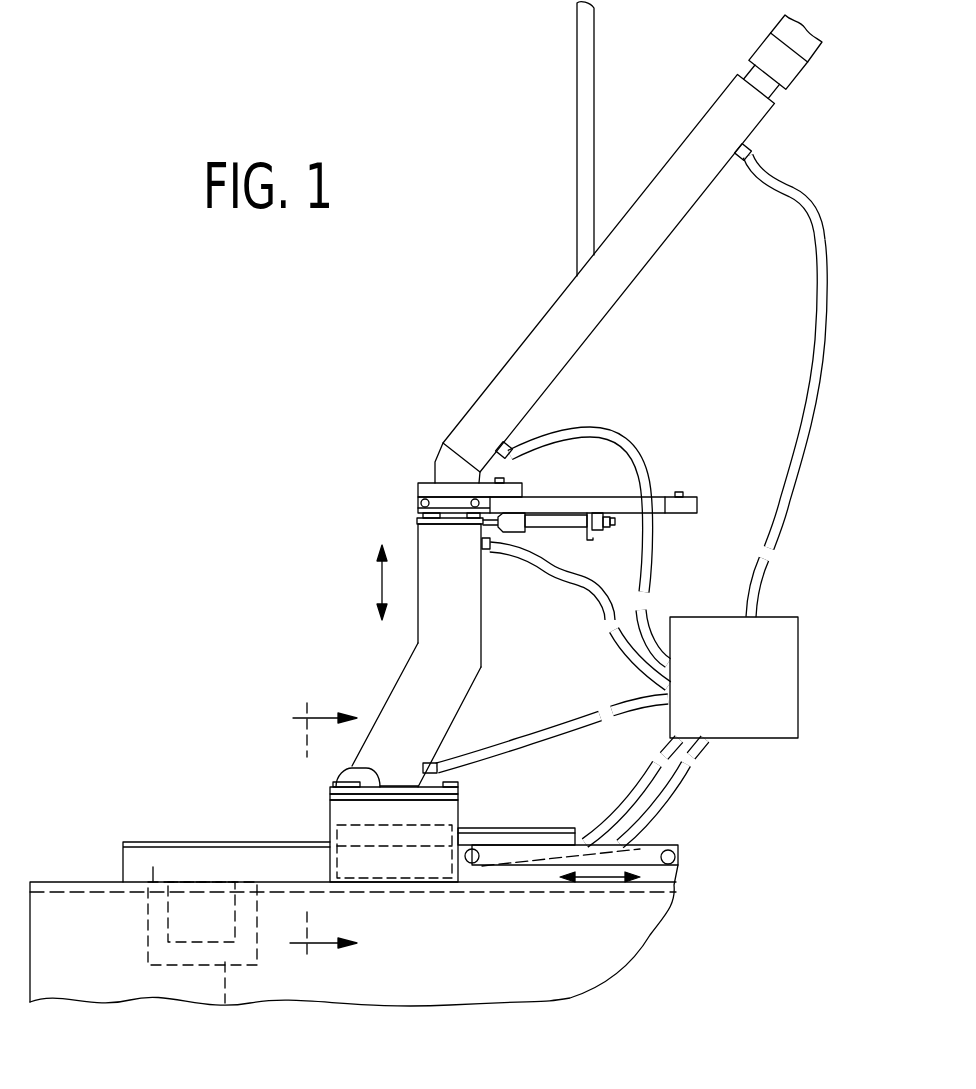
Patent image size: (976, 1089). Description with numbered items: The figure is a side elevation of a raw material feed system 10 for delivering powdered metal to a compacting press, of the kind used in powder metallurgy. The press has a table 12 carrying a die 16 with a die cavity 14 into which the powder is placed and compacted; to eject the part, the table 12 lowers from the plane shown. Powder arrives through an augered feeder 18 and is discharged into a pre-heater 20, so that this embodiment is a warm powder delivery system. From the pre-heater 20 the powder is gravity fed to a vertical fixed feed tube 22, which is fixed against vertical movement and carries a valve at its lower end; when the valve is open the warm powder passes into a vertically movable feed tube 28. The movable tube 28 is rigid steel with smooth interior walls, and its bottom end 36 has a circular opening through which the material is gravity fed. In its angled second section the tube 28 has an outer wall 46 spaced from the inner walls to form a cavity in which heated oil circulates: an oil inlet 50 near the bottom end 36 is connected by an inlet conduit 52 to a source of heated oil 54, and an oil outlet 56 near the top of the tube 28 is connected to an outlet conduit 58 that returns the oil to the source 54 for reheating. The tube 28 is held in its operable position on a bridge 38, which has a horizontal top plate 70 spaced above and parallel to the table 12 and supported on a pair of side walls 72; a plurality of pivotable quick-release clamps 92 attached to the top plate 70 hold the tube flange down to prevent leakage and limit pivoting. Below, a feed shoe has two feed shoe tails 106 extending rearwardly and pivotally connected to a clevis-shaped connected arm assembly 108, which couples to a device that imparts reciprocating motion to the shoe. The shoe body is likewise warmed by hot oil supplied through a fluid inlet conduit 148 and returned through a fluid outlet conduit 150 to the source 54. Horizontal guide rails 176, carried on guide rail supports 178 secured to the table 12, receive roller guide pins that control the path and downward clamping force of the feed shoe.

The raw material feed system 10 is at (435, 521).
The table 12 is at (359, 953).
The die cavity 14 is at (218, 930).
The die 16 is at (231, 1001).
The augered feeder 18 is at (806, 36).
The pre-heater 20 is at (637, 249).
The vertical fixed feed tube 22 is at (425, 510).
The vertically movable feed tube 28 is at (408, 649).
The bottom end of vertically movable feed tube 36 is at (420, 783).
The bridge 38 is at (401, 858).
The outer wall 46 is at (385, 700).
The oil inlet 50 is at (437, 763).
The inlet conduit 52 is at (553, 732).
The source of heated oil 54 is at (752, 735).
The oil outlet 56 is at (488, 552).
The outlet conduit 58 is at (586, 596).
The horizontal top plate 70 is at (462, 802).
The side walls 72 is at (395, 862).
The clamps 92 is at (345, 777).
The feed shoe tails 106 is at (553, 837).
The clevis-shaped connected arm assembly 108 is at (642, 858).
The fluid inlet conduit 148 is at (657, 752).
The fluid outlet conduit 150 is at (685, 789).
The horizontal guide rails 176 is at (255, 842).
The guide rail supports 178 is at (153, 867).